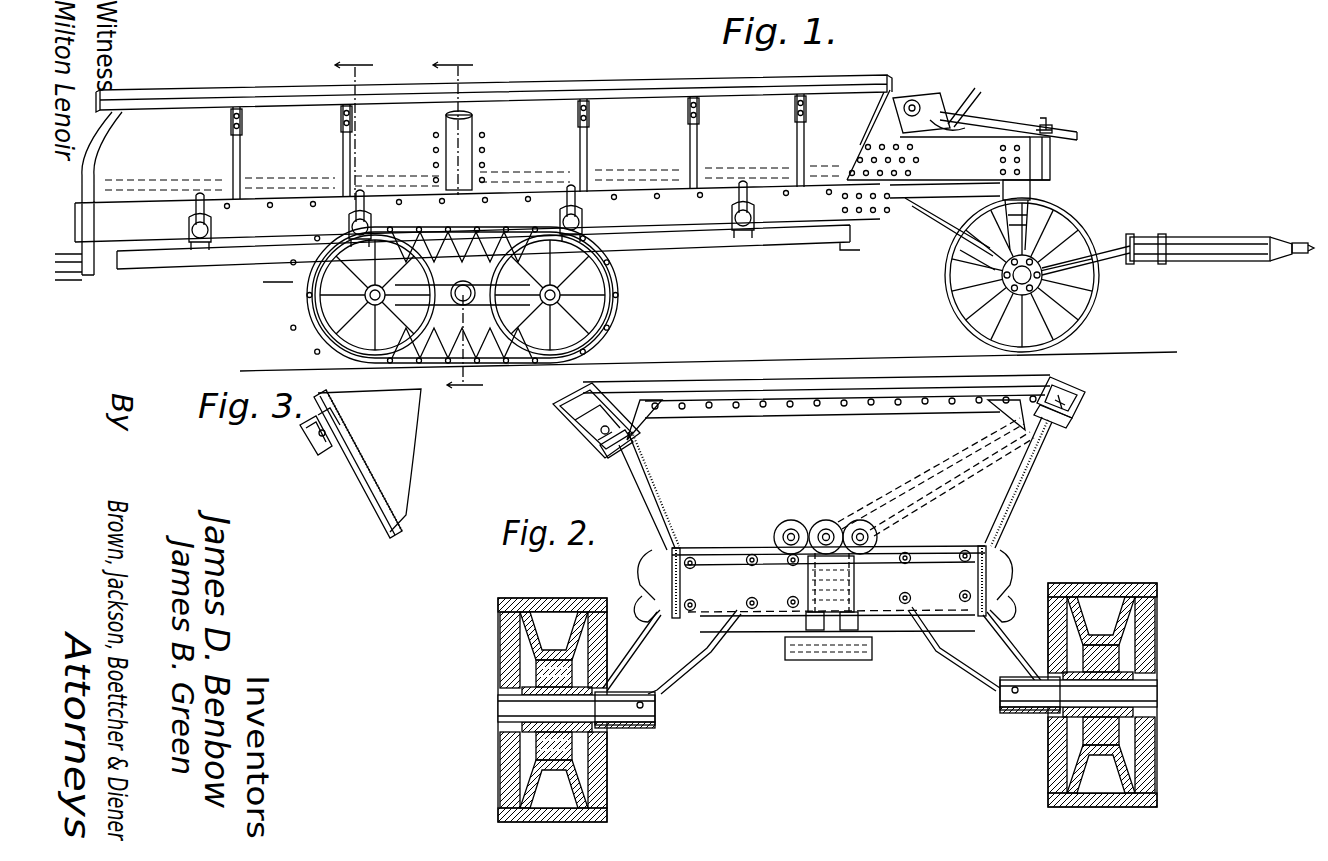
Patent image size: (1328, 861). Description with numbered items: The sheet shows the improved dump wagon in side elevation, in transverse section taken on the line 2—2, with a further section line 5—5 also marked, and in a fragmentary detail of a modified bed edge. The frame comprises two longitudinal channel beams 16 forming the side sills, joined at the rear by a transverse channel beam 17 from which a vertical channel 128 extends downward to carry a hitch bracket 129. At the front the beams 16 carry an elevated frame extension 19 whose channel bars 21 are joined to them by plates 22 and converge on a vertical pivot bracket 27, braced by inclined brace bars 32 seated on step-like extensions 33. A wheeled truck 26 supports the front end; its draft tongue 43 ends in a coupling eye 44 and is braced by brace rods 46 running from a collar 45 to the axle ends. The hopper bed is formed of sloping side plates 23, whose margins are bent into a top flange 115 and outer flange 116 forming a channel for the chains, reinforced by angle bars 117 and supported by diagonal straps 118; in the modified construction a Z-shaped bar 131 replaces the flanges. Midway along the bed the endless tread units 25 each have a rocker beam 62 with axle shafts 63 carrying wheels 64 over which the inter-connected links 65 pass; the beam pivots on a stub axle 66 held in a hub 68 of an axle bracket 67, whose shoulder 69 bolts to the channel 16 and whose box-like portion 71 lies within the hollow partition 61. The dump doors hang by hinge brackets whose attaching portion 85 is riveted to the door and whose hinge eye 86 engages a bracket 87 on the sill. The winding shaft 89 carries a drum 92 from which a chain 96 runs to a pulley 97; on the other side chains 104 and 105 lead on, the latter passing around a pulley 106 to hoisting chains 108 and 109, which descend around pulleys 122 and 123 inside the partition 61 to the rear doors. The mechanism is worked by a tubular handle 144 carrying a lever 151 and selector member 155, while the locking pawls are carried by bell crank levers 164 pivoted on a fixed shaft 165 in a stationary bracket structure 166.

In FIG. 1, the line 2— 2 is at (459, 224).
In FIG. 1, the section line 5- 5 is at (318, 173).
In FIG. 1, the longitudinal beams 16 is at (245, 237).
In FIG. 2, the longitudinal beams 16 is at (667, 572).
In FIG. 1, the transverse channel beam 17 is at (78, 215).
In FIG. 1, the elevated frame extension 19 is at (1043, 165).
In FIG. 1, the channel bars 21 is at (980, 192).
In FIG. 1, the plates 22 is at (885, 128).
In FIG. 1, the side plates 23 is at (270, 123).
In FIG. 2, the side plates 23 is at (650, 498).
In FIG. 3, the side plates 23 is at (398, 531).
In FIG. 1, the endless tread units 25 is at (624, 300).
In FIG. 2, the endless tread units 25 is at (495, 640).
In FIG. 1, the wheeled truck 26 is at (973, 280).
In FIG. 1, the vertical pivot bracket 27 is at (1037, 217).
In FIG. 1, the inclined brace bars 32 is at (967, 222).
In FIG. 1, the step-like extensions 33 is at (968, 250).
In FIG. 1, the draft tongue 43 is at (1227, 253).
In FIG. 1, the coupling eye 44 is at (1308, 250).
In FIG. 1, the collar 45 is at (1140, 257).
In FIG. 1, the brace rods 46 is at (1105, 250).
In FIG. 2, the transverse partition 61 is at (772, 418).
In FIG. 1, the rocker beam 62 is at (480, 305).
In FIG. 2, the rocker beam 62 is at (527, 747).
In FIG. 1, the axle shafts 63 is at (317, 322).
In FIG. 1, the wheels 64 is at (600, 280).
In FIG. 2, the wheels 64 is at (595, 605).
In FIG. 1, the inter-connected links 65 is at (597, 340).
In FIG. 2, the inter-connected links 65 is at (500, 598).
In FIG. 1, the stub axle 66 is at (470, 270).
In FIG. 2, the stub axle 66 is at (503, 708).
In FIG. 1, the axle bracket 67 is at (490, 260).
In FIG. 2, the axle bracket 67 is at (683, 668).
In FIG. 2, the hub 68 is at (653, 723).
In FIG. 2, the shoulder 69 is at (825, 651).
In FIG. 2, the box-like portion 71 is at (727, 537).
In FIG. 1, the attaching portion 85 is at (190, 250).
In FIG. 2, the attaching portion 85 is at (652, 601).
In FIG. 1, the hinge eye 86 is at (773, 207).
In FIG. 1, the bracket 87 is at (197, 213).
In FIG. 2, the bracket 87 is at (657, 547).
In FIG. 1, the shaft 89 is at (917, 110).
In FIG. 1, the winding drum 92 is at (910, 103).
In FIG. 2, the chain 96 is at (583, 422).
In FIG. 2, the pulley 97 is at (593, 437).
In FIG. 2, the chain 104 is at (1072, 388).
In FIG. 2, the chain 105 is at (1067, 403).
In FIG. 2, the pulley 106 is at (1073, 417).
In FIG. 2, the hoisting chain 108 is at (935, 495).
In FIG. 2, the hoisting chain 109 is at (930, 483).
In FIG. 1, the top flange 115 is at (620, 73).
In FIG. 2, the top flange 115 is at (557, 403).
In FIG. 1, the outer flange 116 is at (560, 92).
In FIG. 2, the outer flange 116 is at (563, 415).
In FIG. 1, the angle bars 117 is at (228, 152).
In FIG. 2, the angle bars 117 is at (637, 495).
In FIG. 3, the angle bars 117 is at (356, 519).
In FIG. 1, the straps 118 is at (227, 117).
In FIG. 2, the straps 118 is at (585, 427).
In FIG. 3, the straps 118 is at (314, 452).
In FIG. 2, the pulley 122 is at (833, 520).
In FIG. 2, the pulley 123 is at (852, 527).
In FIG. 1, the vertical channel 128 is at (93, 270).
In FIG. 1, the hitch bracket 129 is at (70, 262).
In FIG. 3, the Z-shaped bar 131 is at (307, 435).
In FIG. 1, the operating lever 144 is at (1027, 108).
In FIG. 1, the lever 151 is at (1053, 112).
In FIG. 1, the selector member 155 is at (1043, 118).
In FIG. 1, the bell crank levers 164 is at (950, 128).
In FIG. 1, the fixed shaft 165 is at (930, 123).
In FIG. 1, the stationary bracket structure 166 is at (965, 95).